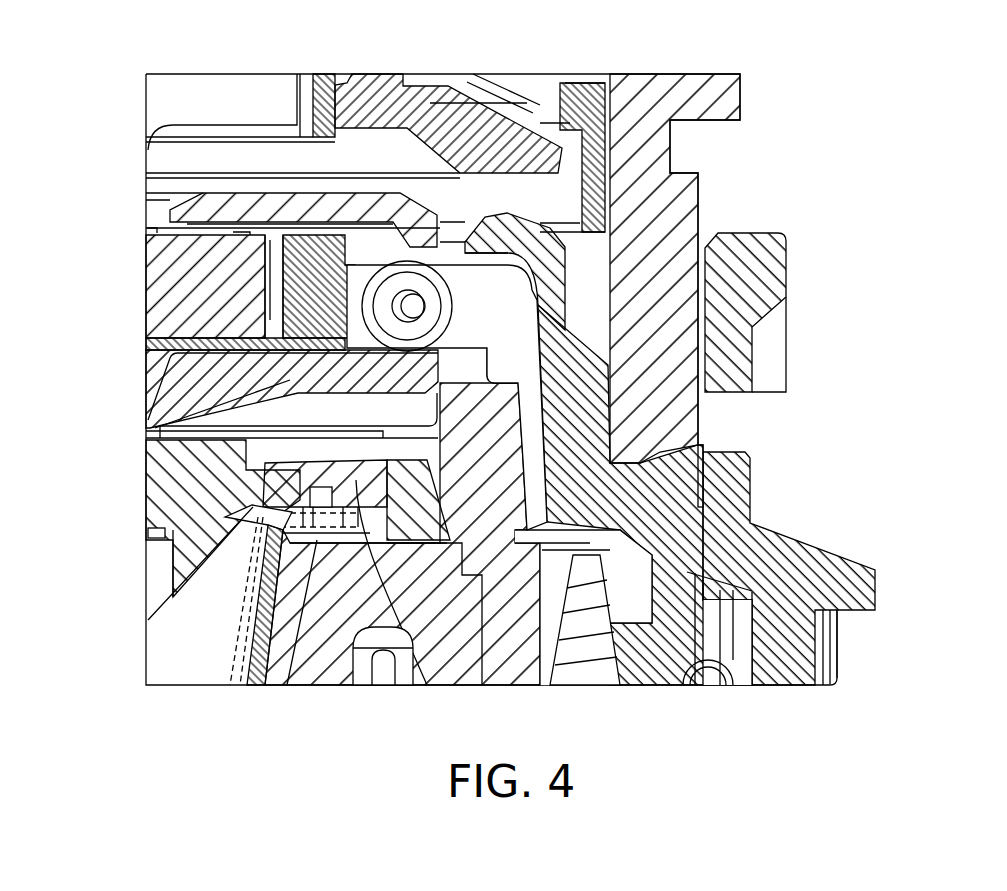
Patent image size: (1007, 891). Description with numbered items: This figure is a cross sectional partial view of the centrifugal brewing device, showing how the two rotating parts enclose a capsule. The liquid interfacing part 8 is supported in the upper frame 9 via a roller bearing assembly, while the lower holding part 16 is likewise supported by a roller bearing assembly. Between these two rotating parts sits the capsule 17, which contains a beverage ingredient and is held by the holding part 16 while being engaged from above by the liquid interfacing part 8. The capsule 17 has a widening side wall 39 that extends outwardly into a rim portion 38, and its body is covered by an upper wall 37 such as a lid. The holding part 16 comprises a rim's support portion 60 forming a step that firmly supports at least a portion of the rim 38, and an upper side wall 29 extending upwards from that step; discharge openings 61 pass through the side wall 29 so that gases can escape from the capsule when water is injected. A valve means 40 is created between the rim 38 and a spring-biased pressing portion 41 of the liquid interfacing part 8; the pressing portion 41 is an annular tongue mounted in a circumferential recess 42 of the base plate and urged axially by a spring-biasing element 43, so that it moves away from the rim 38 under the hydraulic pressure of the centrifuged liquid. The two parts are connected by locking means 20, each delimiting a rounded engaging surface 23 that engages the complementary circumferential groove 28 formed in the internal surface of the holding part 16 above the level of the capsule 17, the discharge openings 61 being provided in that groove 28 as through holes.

The liquid interfacing part 8 is at (160, 373).
The upper frame 9 is at (640, 82).
The holding part 16 is at (337, 670).
The capsule 17 is at (240, 638).
The locking means 20 is at (307, 284).
The engaging surface 23 is at (446, 319).
The groove 28 is at (456, 388).
The upper side wall 29 is at (498, 573).
The upper wall 37 is at (228, 553).
The rim portion 38 is at (285, 686).
The side wall 39 is at (237, 671).
The valve means 40 is at (150, 452).
The pressing portion 41 is at (427, 662).
The circumferential recess 42 is at (330, 422).
The spring-biasing element 43 is at (158, 430).
The rim's support portion 60 is at (470, 670).
The discharge openings 61 is at (500, 367).